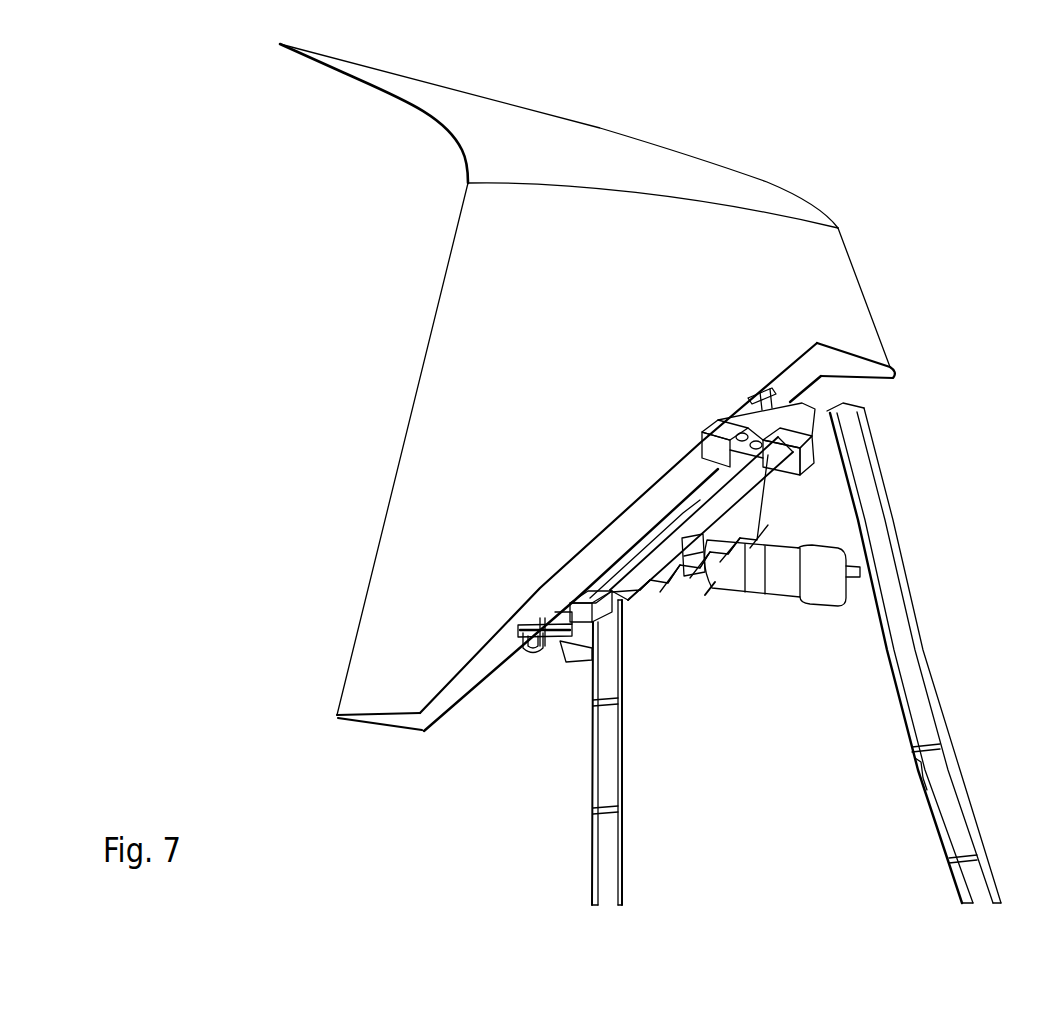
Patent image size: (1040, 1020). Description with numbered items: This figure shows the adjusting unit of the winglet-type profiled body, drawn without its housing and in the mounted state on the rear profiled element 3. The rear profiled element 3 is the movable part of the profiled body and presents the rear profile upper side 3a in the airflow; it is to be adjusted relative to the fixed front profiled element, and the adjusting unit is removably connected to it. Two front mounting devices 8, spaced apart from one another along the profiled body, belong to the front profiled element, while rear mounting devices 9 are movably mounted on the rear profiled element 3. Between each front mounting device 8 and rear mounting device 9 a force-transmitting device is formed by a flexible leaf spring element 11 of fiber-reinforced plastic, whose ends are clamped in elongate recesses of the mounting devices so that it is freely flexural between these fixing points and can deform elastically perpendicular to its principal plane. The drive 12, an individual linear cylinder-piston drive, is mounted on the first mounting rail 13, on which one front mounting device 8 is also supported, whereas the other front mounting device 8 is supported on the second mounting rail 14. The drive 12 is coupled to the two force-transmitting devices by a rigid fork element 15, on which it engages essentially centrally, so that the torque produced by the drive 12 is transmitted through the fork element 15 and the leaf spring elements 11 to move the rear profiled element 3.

The rear profiled element 3 is at (390, 266).
The rear profile upper side 3a is at (440, 437).
The front mounting device 8 is at (818, 425).
The rear mounting device 9 is at (753, 402).
The leaf spring element 11 is at (543, 627).
The drive 12 is at (752, 611).
The first mounting rail 13 is at (862, 512).
The second mounting rail 14 is at (600, 757).
The fork element 15 is at (755, 503).